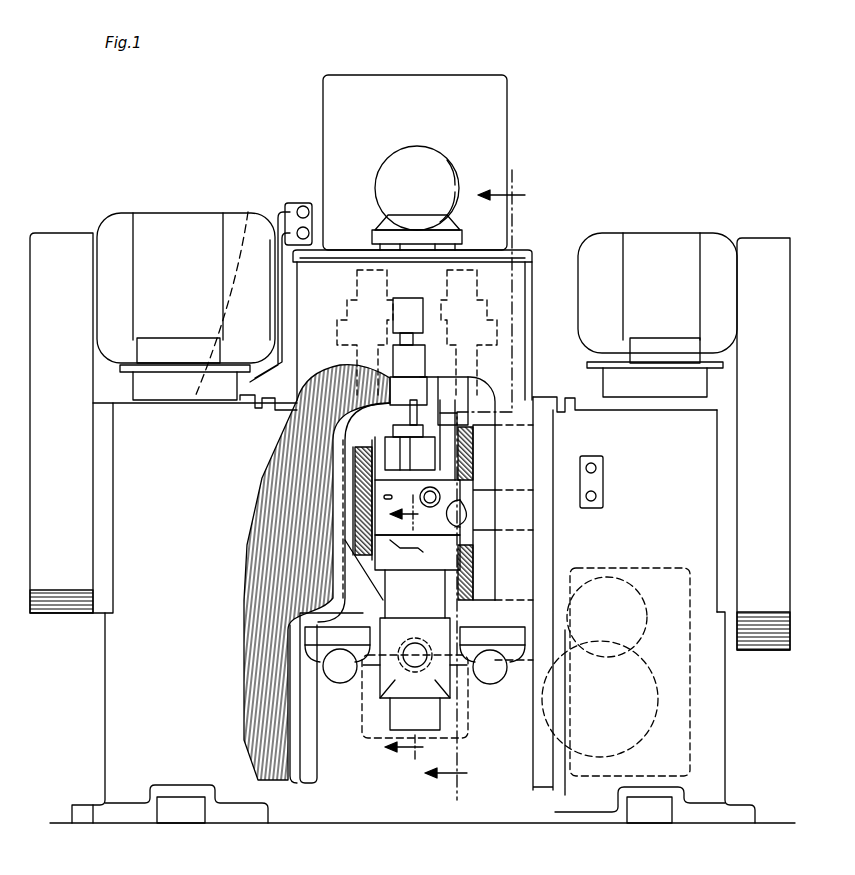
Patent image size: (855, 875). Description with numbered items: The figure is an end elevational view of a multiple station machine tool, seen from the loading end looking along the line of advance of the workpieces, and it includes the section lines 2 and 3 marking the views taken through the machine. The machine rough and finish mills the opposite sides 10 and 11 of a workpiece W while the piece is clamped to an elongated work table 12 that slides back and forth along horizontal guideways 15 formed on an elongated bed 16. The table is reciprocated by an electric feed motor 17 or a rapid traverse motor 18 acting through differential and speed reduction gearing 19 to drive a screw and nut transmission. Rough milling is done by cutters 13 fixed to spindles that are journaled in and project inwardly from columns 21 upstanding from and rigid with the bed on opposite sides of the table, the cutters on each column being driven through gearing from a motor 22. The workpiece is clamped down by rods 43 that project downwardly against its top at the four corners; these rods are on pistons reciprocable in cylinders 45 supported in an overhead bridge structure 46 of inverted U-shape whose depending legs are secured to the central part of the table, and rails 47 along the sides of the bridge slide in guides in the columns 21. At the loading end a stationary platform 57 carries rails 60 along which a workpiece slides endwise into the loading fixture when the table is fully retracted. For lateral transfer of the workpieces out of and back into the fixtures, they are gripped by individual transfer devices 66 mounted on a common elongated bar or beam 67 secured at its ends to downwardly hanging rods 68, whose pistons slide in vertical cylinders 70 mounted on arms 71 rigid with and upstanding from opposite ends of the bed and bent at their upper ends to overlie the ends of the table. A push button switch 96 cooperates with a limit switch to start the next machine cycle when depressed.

The section line 2- 2 is at (475, 487).
The section line 3- 3 is at (400, 633).
The side of the workpiece 10 is at (355, 516).
The side of the workpiece 11 is at (470, 510).
The work table 12 is at (547, 621).
The cutters 13 is at (472, 458).
The horizontal guideways 15 is at (338, 682).
The bed 16 is at (412, 824).
The electric feed motor 17 is at (646, 609).
The rapid traverse motor 18 is at (647, 665).
The differential and speed reduction gearing 19 is at (668, 568).
The columns 21 is at (112, 678).
The motor 22 is at (190, 222).
The rods 43 is at (440, 412).
The cylinders 45 is at (355, 296).
The overhead bridge structure 46 is at (518, 284).
The rails 47 is at (268, 412).
The stationary platform 57 is at (415, 572).
The rails 60 is at (458, 526).
The transfer devices 66 is at (437, 490).
The bar or beam 67 is at (400, 489).
The rods 68 is at (444, 406).
The vertical cylinders 70 is at (413, 306).
The arms 71 is at (340, 380).
The push button switch 96 is at (597, 468).
The workpiece W is at (462, 540).